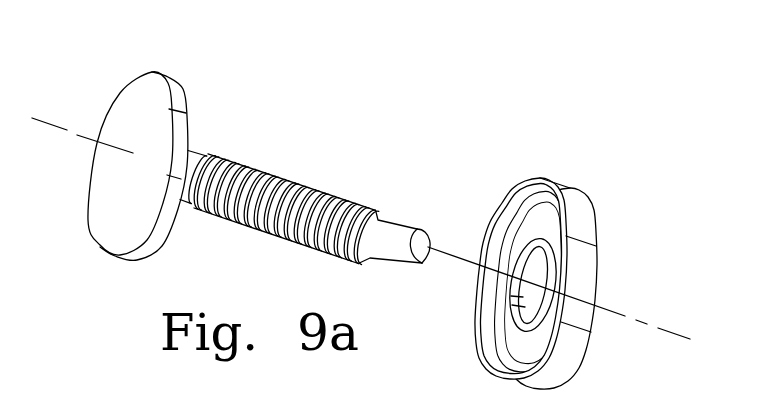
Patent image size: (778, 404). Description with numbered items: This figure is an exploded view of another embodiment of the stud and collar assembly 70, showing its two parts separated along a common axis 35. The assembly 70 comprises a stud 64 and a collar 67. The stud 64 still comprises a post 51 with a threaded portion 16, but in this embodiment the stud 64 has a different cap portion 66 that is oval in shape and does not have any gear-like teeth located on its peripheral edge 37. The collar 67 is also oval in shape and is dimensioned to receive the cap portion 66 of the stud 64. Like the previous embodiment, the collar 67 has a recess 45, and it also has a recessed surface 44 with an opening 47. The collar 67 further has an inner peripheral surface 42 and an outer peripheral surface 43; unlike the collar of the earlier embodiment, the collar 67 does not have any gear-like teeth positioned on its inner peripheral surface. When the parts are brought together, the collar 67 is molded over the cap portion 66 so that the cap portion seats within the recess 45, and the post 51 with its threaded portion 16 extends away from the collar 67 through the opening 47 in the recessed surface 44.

The longitudinal axis 35 is at (44, 117).
The cap portion 66 is at (136, 92).
The peripheral edge 37 is at (157, 228).
The threaded portion 16 is at (336, 201).
The stud 64 is at (243, 164).
The post 51 is at (401, 221).
The stud and collar assembly 70 is at (487, 137).
The outer peripheral surface 43 is at (590, 245).
The collar 67 is at (566, 188).
The recessed surface 44 is at (548, 186).
The inner peripheral surface 42 is at (484, 277).
The opening 47 is at (550, 320).
The recess 45 is at (520, 347).